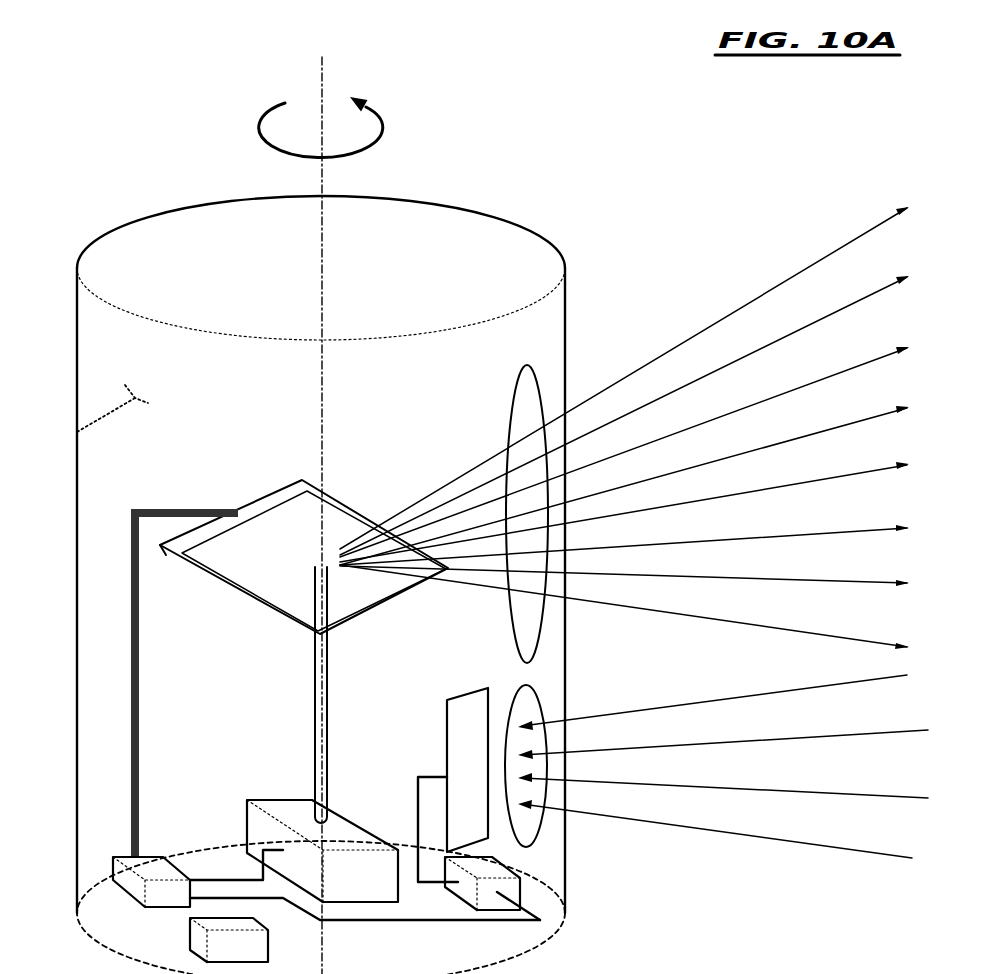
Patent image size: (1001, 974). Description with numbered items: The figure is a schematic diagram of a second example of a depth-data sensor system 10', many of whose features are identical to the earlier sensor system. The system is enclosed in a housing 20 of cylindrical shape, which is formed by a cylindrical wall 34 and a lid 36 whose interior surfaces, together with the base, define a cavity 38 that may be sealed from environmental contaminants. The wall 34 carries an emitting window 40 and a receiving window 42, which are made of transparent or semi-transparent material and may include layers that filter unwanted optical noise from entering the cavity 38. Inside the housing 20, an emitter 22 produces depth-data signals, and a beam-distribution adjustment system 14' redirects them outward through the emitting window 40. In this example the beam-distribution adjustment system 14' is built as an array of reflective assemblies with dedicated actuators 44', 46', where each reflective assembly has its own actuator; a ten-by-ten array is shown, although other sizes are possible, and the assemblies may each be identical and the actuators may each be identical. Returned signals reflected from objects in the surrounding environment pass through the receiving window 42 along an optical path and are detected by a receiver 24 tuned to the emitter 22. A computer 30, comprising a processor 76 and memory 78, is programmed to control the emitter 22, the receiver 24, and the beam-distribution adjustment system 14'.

The depth-data sensor system 10' is at (309, 554).
The housing 20 is at (298, 585).
The lid 36 is at (143, 243).
The cylindrical wall 34 is at (77, 735).
The cavity 38 is at (77, 432).
The emitting window 40 is at (537, 385).
The receiving window 42 is at (533, 700).
The beam-distribution adjustment system 14' is at (308, 529).
The array of emitters and detectors 44', 46' is at (319, 550).
The emitter 22 is at (302, 792).
The receiver 24 is at (440, 728).
The computer 30 is at (280, 890).
The processor 76 is at (157, 872).
The memory 78 is at (208, 950).